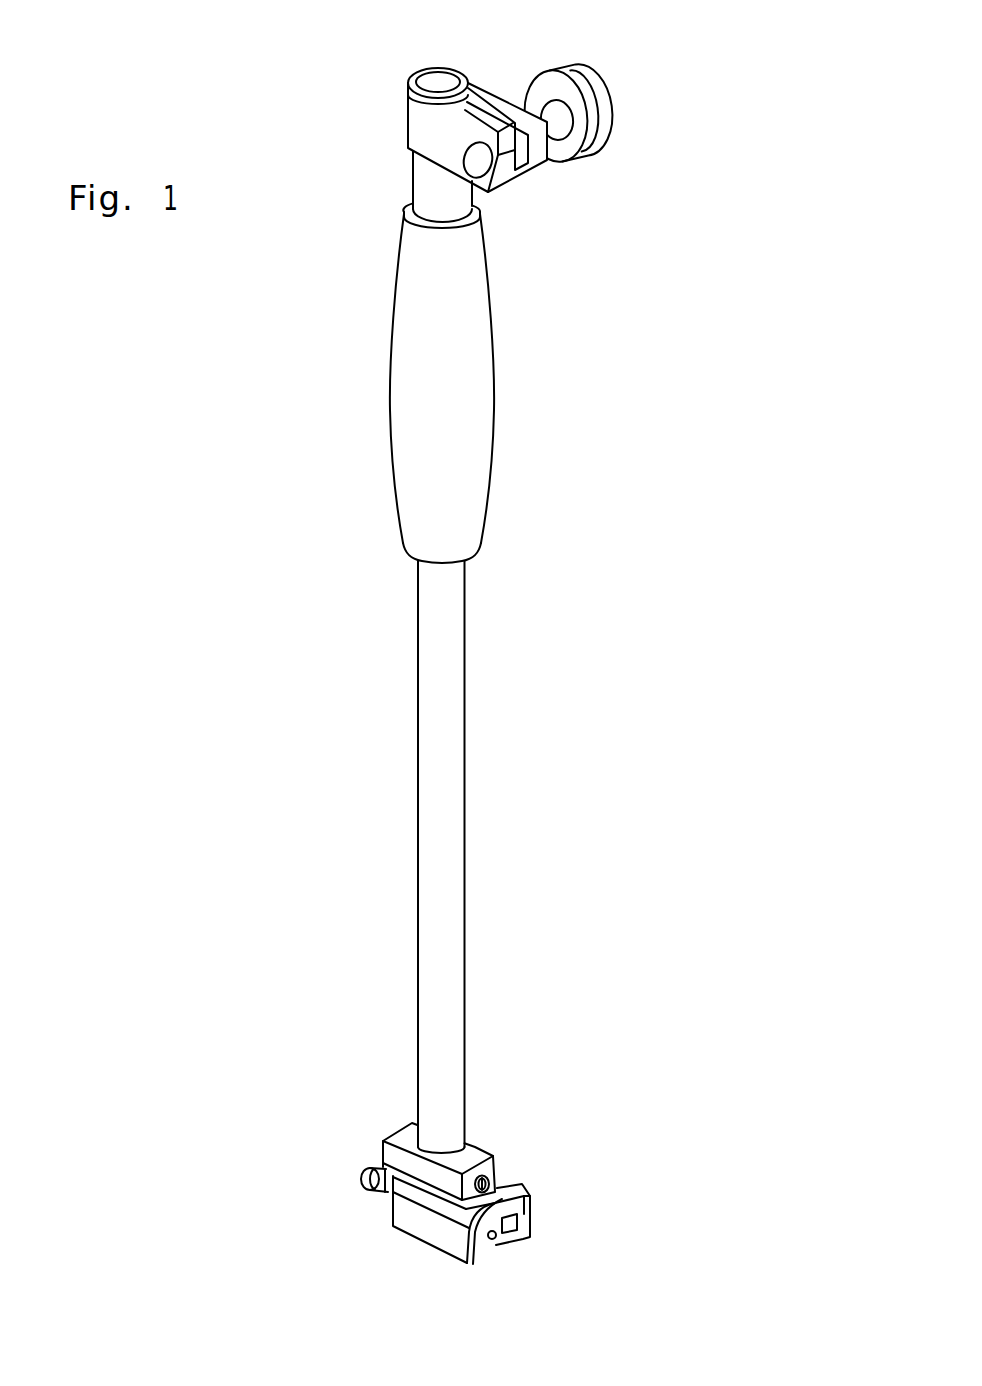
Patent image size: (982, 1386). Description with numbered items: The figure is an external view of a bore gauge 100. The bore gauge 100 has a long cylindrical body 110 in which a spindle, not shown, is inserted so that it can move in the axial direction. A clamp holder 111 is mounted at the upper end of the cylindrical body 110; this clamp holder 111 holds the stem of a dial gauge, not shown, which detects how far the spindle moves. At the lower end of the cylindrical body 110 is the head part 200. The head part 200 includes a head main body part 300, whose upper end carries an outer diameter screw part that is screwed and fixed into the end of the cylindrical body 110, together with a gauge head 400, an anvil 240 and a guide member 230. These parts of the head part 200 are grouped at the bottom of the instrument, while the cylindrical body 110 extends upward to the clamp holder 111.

The bore gauge 100 is at (610, 272).
The cylindrical body 110 is at (442, 963).
The clamp holder 111 is at (492, 97).
The head part 200 is at (532, 1138).
The guide member 230 is at (423, 1227).
The anvil 240 is at (374, 1191).
The head main body part 300 is at (390, 1154).
The gauge head 400 is at (497, 1240).